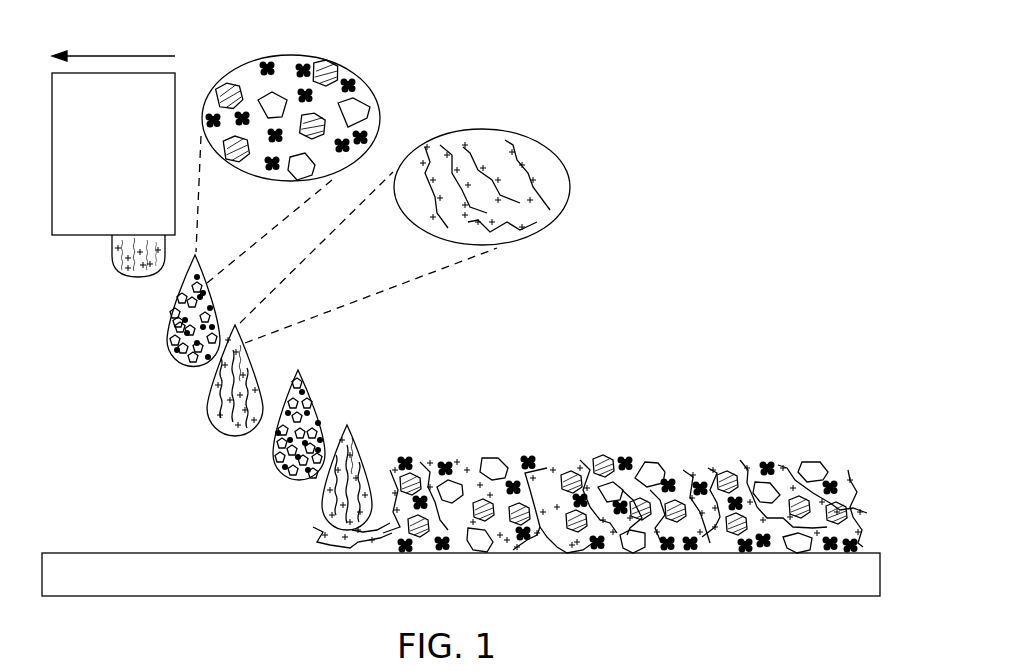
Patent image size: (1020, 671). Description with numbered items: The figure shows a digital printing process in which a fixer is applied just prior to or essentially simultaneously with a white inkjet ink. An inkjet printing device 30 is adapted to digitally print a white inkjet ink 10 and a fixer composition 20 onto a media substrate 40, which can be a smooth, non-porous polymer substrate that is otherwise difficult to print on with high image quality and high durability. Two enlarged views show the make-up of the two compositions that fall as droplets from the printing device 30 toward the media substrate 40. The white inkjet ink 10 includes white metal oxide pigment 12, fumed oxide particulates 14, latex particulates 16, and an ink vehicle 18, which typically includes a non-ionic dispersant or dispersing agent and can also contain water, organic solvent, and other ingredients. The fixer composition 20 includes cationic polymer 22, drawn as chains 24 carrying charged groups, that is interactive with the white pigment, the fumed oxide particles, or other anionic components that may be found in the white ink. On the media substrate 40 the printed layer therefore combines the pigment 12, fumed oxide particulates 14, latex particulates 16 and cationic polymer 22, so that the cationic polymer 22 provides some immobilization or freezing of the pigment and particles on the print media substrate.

The white inkjet ink 10 is at (383, 110).
The white metal oxide pigment 12 is at (270, 97).
The fumed oxide particulates 14 is at (300, 63).
The latex particulates 16 is at (325, 63).
The ink vehicle 18 is at (269, 65).
The fixer composition 20 is at (575, 165).
The cationic polymer 22 is at (505, 140).
The polymer chains 24 is at (480, 137).
The inkjet printing device 30 is at (98, 166).
The media substrate 40 is at (448, 586).